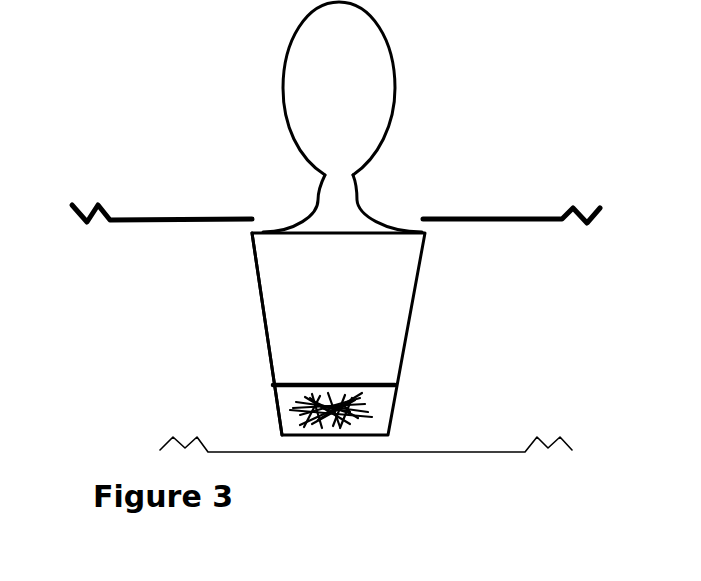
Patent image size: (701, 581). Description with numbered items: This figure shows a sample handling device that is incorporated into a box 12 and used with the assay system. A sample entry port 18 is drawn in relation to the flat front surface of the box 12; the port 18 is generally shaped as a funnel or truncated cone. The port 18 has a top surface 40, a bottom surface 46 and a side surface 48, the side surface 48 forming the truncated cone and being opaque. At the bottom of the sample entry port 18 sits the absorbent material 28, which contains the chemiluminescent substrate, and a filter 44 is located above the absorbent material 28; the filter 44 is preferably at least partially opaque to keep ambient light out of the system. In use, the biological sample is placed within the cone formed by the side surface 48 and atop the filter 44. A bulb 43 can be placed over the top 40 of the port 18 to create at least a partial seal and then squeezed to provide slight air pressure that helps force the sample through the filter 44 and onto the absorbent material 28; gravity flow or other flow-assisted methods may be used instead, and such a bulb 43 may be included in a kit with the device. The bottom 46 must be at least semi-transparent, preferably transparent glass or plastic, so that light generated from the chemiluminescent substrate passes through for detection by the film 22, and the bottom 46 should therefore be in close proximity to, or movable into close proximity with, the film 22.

The box 12 is at (480, 219).
The sample entry port 18 is at (286, 285).
The film 22 is at (462, 452).
The absorbent material 28 is at (353, 407).
The top surface 40 is at (297, 232).
The bulb 43 is at (392, 70).
The filter 44 is at (358, 385).
The bottom surface 46 is at (362, 435).
The side surface 48 is at (266, 323).